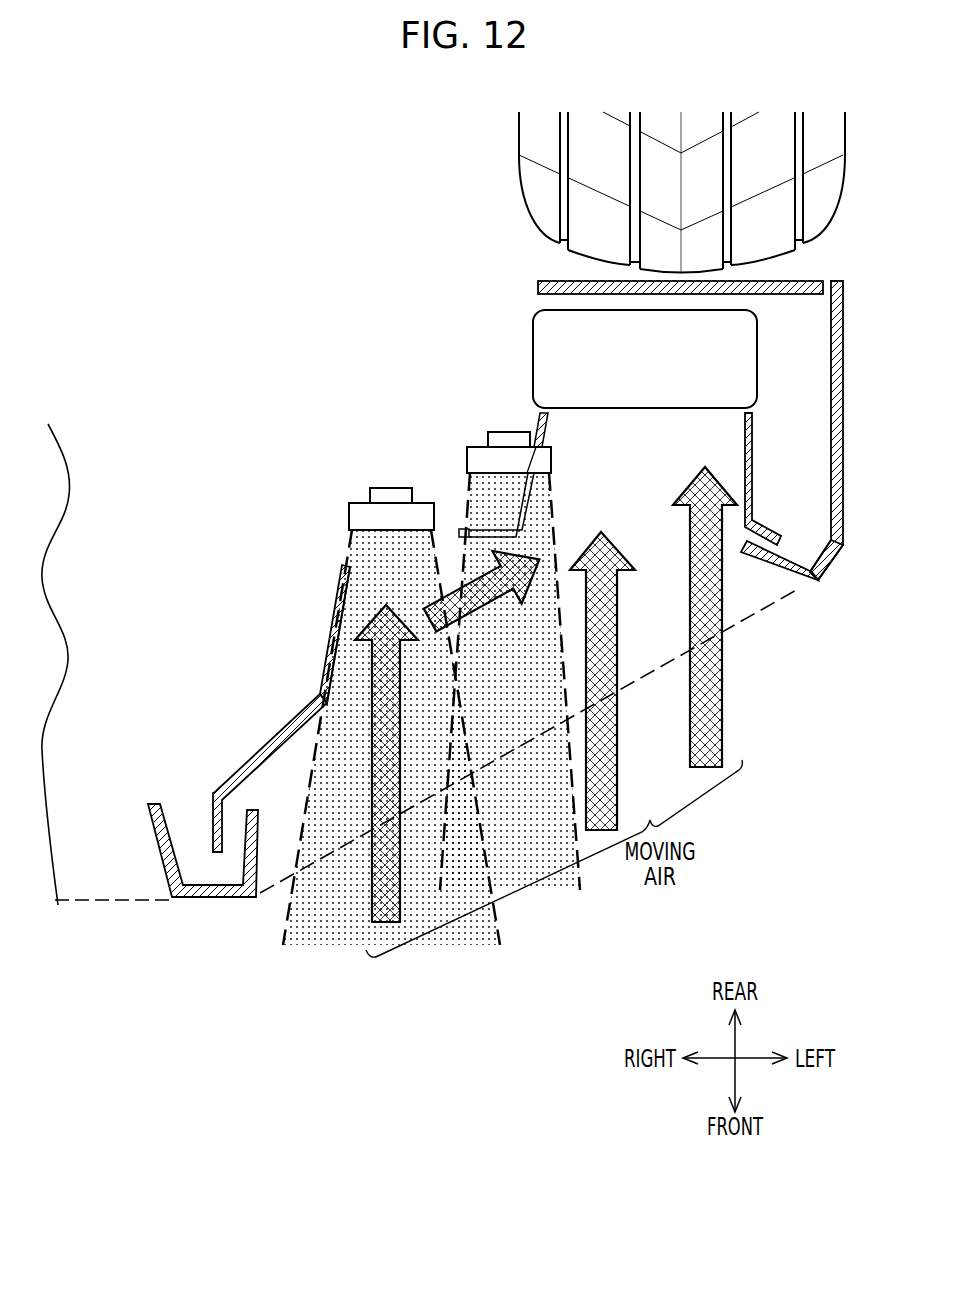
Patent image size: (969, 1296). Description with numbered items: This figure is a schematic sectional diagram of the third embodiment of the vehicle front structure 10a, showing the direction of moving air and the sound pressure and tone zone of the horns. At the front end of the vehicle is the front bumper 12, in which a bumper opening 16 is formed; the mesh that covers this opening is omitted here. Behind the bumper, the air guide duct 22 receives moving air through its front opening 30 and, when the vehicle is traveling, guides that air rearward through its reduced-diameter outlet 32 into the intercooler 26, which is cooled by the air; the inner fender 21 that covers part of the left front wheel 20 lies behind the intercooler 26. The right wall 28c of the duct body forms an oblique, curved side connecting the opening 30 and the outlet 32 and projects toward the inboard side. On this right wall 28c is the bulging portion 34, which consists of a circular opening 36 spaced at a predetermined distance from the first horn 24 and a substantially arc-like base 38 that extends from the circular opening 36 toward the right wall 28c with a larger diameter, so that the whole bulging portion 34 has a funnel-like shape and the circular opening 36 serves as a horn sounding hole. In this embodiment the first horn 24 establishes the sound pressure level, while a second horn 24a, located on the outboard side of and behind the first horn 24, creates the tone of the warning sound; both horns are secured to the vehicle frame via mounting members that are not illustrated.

The vehicle air blowing device 10a is at (317, 317).
The left front wheel 20 is at (527, 205).
The inner fender 21 is at (538, 288).
The intercooler 26 is at (532, 346).
The outlet 32 is at (746, 410).
The front bumper 12 is at (846, 406).
The bumper opening 16 is at (798, 567).
The opening 30 is at (741, 535).
The first horn 24 is at (372, 483).
The second horn 24a is at (496, 424).
The circular opening 36 is at (458, 533).
The bulging portion 34 is at (332, 603).
The base 38 is at (326, 640).
The air guide duct 22 is at (251, 708).
The right wall 28c is at (253, 756).